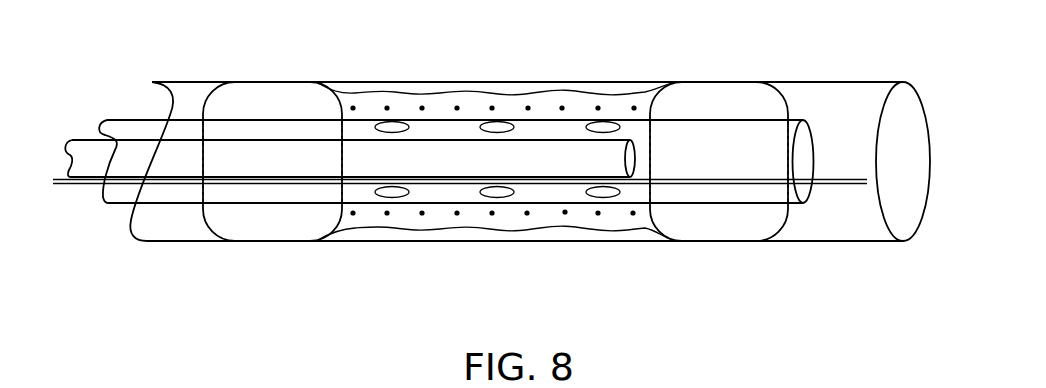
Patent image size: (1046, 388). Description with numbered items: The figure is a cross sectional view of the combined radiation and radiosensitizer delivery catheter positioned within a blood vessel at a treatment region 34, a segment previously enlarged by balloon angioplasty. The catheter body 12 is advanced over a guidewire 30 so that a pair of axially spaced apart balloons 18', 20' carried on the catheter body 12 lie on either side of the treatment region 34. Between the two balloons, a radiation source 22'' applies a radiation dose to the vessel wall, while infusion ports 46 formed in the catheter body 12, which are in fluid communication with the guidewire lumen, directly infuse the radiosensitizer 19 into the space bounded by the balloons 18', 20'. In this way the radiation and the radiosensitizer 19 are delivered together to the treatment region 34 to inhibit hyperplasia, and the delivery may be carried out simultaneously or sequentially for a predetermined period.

The catheter body 12 is at (183, 118).
The balloon 20' is at (276, 139).
The infusion port 46 is at (393, 125).
The radiation source 22'' is at (350, 107).
The radiosensitizer 19 is at (634, 106).
The balloon 18' is at (726, 138).
The guidewire 30 is at (817, 183).
The treatment region 34 is at (670, 248).